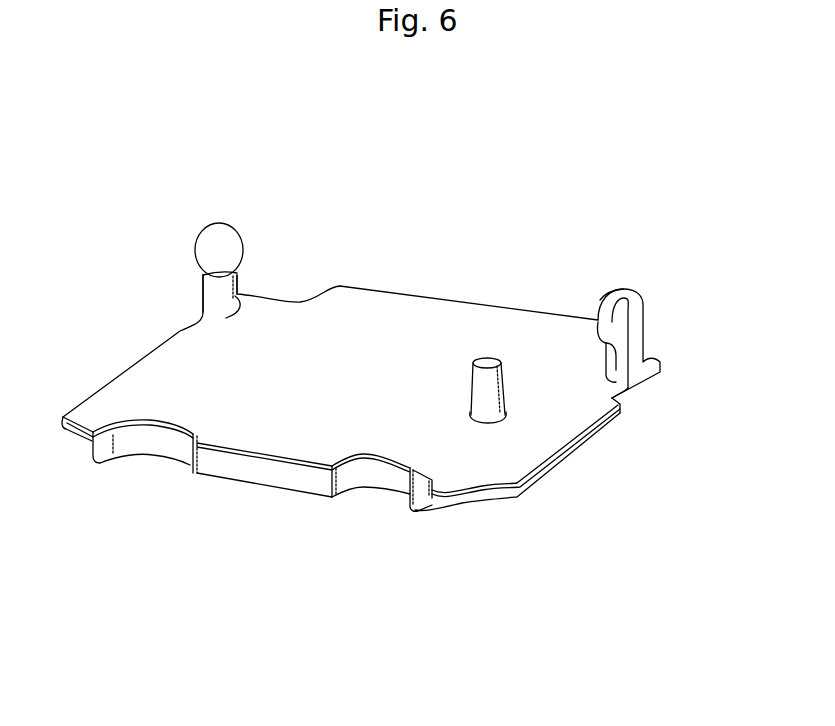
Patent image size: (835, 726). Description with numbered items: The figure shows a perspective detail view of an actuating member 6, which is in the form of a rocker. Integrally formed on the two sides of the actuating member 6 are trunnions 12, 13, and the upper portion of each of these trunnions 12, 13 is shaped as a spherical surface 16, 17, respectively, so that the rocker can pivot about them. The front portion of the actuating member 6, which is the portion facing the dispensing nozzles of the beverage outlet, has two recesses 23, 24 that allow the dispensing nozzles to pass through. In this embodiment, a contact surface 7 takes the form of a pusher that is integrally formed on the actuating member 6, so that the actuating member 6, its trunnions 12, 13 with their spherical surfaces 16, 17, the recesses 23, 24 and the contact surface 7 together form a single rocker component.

The actuating member 6 is at (410, 318).
The contact surface 7 is at (505, 402).
The trunnion 12 is at (212, 297).
The trunnion 13 is at (627, 318).
The spherical surface 16 is at (228, 246).
The spherical surface 17 is at (602, 301).
The recess 23 is at (153, 466).
The recess 24 is at (376, 502).